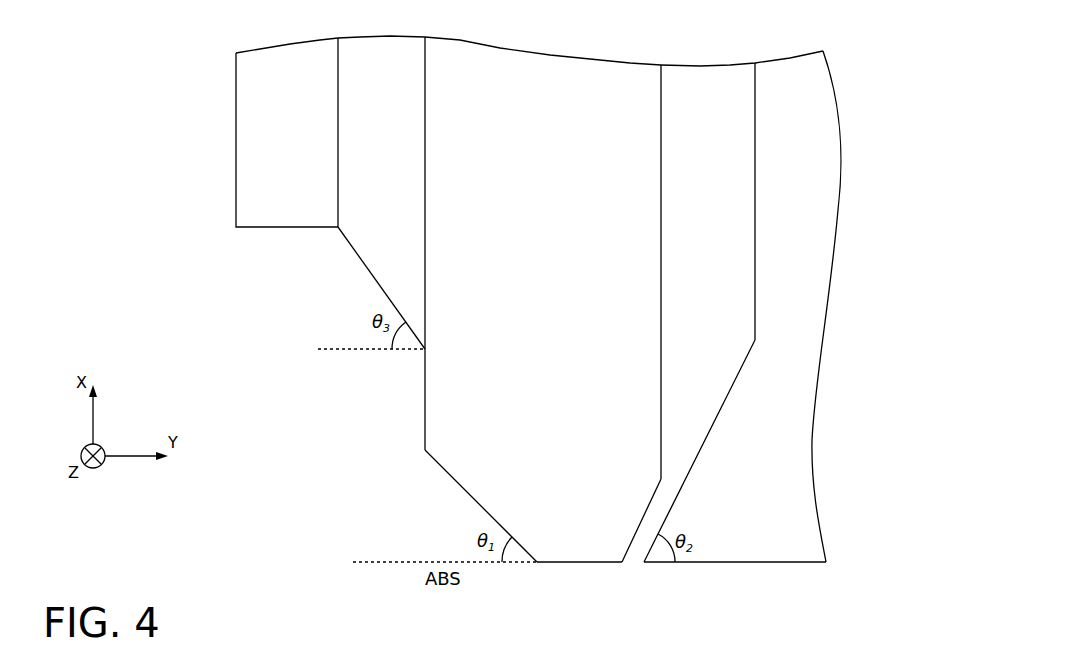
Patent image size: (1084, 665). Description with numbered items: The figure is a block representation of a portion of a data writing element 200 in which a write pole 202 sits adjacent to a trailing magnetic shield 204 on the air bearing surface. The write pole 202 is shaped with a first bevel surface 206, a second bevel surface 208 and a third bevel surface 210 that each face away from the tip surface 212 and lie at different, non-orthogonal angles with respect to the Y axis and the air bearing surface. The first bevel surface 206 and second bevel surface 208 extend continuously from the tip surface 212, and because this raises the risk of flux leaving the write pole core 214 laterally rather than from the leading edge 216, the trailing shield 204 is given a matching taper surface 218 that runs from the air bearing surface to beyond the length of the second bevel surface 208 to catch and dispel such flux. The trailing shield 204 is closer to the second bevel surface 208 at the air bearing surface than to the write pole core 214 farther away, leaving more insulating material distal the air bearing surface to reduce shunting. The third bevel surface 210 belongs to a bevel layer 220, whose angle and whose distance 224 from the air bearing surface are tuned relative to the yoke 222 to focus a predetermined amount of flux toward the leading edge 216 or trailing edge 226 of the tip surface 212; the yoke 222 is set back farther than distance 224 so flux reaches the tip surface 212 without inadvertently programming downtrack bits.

The data writing element 200 is at (146, 27).
The write pole 202 is at (314, 420).
The trailing magnetic shield 204 is at (810, 86).
The first bevel surface 206 is at (485, 490).
The second bevel surface 208 is at (646, 512).
The third bevel surface 210 is at (366, 264).
The tip surface 212 is at (581, 564).
The write pole core 214 is at (560, 81).
The leading edge 216 is at (537, 572).
The taper surface 218 is at (713, 426).
The bevel layer 220 is at (398, 81).
The yoke 222 is at (303, 81).
The distance 224 is at (369, 358).
The trailing edge 226 is at (623, 572).